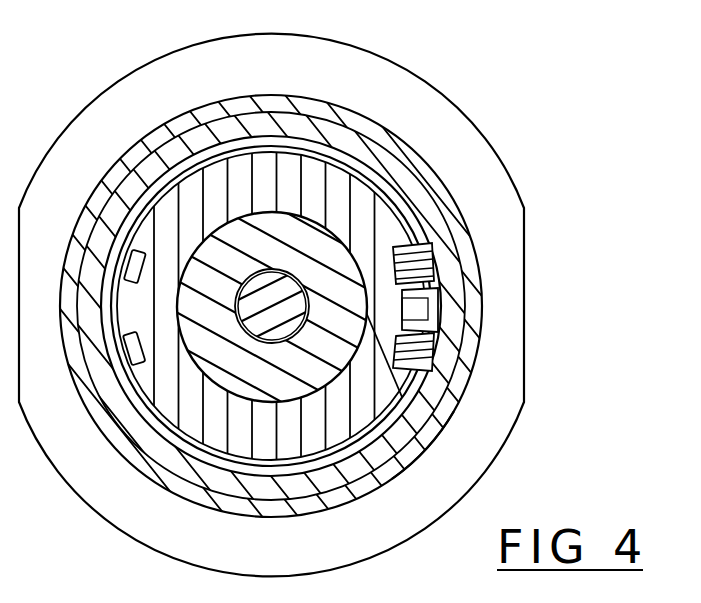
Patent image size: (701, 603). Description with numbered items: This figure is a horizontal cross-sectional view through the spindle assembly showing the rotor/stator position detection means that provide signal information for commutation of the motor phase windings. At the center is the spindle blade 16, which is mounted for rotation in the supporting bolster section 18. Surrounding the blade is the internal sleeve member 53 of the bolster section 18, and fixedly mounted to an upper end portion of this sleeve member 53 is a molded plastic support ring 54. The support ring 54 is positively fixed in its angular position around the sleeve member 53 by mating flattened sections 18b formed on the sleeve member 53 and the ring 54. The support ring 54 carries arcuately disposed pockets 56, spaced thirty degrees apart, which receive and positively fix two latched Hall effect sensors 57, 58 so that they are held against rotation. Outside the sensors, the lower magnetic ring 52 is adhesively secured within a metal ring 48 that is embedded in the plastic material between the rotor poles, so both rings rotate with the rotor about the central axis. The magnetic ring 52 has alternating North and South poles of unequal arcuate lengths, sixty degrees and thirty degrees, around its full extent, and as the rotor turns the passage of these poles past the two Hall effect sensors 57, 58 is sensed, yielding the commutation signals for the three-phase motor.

The spindle blade 16 is at (267, 293).
The bolster section 18 is at (135, 108).
The flattened sections 18b is at (425, 442).
The metal ring 48 is at (428, 173).
The lower magnetic ring 52 is at (385, 153).
The internal sleeve member 53 is at (265, 370).
The support ring 54 is at (188, 403).
The pockets 56 is at (408, 318).
The Hall effect sensor 57 is at (417, 267).
The Hall effect sensor 58 is at (417, 350).